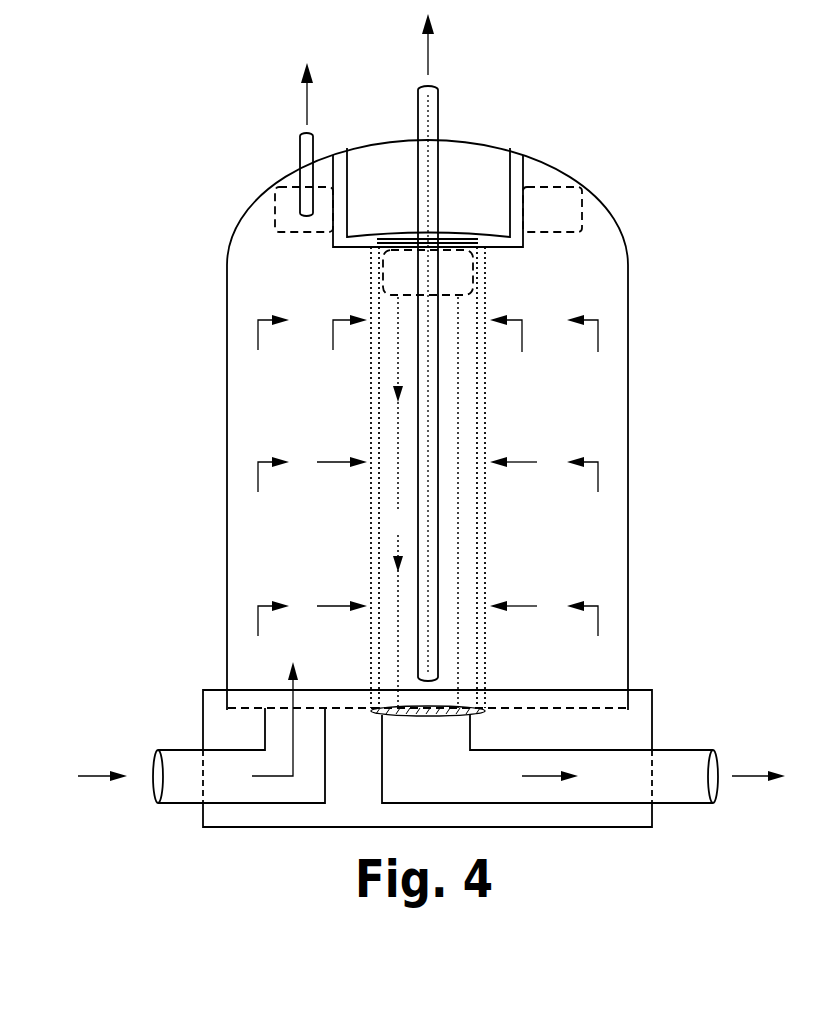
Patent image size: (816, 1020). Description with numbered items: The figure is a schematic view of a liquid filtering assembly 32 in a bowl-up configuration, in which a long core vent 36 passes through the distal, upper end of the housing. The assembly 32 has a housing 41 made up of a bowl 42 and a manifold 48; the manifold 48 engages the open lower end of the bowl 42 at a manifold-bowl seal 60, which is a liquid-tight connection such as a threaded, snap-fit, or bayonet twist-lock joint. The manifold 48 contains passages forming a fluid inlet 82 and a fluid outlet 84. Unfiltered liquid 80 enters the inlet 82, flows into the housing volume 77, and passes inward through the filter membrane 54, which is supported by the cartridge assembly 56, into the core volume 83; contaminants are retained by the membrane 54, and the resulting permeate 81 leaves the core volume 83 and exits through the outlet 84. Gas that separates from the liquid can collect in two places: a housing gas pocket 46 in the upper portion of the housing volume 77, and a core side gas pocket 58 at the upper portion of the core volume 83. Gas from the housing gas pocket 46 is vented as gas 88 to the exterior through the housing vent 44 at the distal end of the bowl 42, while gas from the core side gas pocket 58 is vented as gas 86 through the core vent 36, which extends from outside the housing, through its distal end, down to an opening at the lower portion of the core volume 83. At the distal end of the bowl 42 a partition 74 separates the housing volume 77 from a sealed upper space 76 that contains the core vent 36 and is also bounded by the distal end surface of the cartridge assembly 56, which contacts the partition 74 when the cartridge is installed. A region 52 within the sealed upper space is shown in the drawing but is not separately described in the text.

The liquid filtering assembly 32 is at (100, 58).
The core vent 36 is at (433, 115).
The housing 41 is at (205, 182).
The bowl 42 is at (628, 497).
The housing vent 44 is at (305, 152).
The housing gas pocket 46 is at (285, 218).
The manifold 48 is at (652, 720).
The cavity 52 is at (412, 175).
The filter membrane 54 is at (458, 578).
The cartridge assembly 56 is at (370, 535).
The core side gas pocket 58 is at (455, 270).
The manifold-bowl seal 60 is at (195, 657).
The partition 74 is at (522, 178).
The sealed upper space 76 is at (470, 173).
The housing volume 77 is at (583, 418).
The liquid 80 is at (398, 372).
The permeate 81 is at (598, 337).
The fluid inlet 82 is at (175, 790).
The core volume 83 is at (398, 437).
The fluid outlet 84 is at (686, 790).
The gas 86 is at (430, 57).
The gas 88 is at (300, 105).